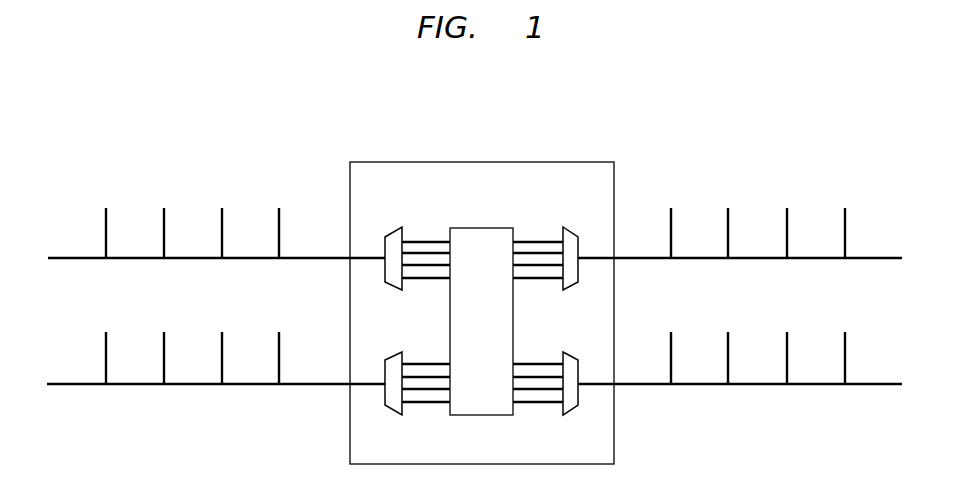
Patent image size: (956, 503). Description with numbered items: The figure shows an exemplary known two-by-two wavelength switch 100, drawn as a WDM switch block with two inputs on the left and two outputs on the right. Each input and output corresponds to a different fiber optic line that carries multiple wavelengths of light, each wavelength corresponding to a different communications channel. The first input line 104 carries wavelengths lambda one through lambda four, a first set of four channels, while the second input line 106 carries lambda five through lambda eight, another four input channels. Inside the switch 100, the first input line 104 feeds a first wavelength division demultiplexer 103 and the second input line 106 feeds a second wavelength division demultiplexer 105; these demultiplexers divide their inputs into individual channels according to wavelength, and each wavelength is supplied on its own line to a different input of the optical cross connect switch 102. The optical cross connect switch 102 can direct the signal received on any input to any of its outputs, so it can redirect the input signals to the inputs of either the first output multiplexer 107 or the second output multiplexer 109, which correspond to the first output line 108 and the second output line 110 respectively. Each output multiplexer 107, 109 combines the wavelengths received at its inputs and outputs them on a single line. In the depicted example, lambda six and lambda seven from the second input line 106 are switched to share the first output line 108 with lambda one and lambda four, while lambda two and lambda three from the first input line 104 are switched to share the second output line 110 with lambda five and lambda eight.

The wavelength switch 100 is at (480, 162).
The optical cross connect switch 102 is at (480, 228).
The first wavelength division demultiplexer 103 is at (393, 232).
The first input line 104 is at (61, 258).
The second wavelength division demultiplexer 105 is at (393, 356).
The second input line 106 is at (61, 384).
The first wavelength division output multiplexer 107 is at (568, 232).
The first output line 108 is at (888, 258).
The second wavelength division output multiplexer 109 is at (568, 356).
The second output line 110 is at (888, 384).